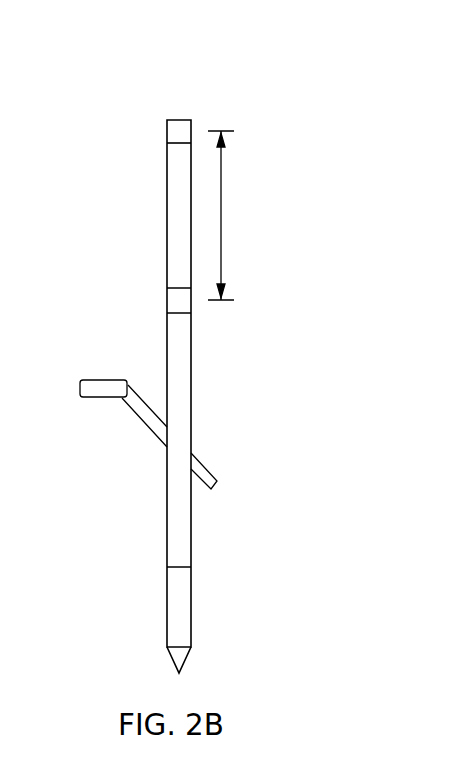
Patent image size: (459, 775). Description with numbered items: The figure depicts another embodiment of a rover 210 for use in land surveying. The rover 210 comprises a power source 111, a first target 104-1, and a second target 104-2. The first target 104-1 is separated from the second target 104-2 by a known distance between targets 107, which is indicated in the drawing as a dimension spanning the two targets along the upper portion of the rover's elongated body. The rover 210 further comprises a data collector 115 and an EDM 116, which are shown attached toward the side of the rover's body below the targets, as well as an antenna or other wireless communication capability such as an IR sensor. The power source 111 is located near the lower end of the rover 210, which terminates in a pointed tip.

The rover 210 is at (244, 104).
The power source 111 is at (192, 618).
The first target 104-1 is at (166, 133).
The second target 104-2 is at (166, 303).
The known distance between targets 107 is at (222, 222).
The data collector 115 is at (128, 410).
The EDM 116 is at (92, 380).